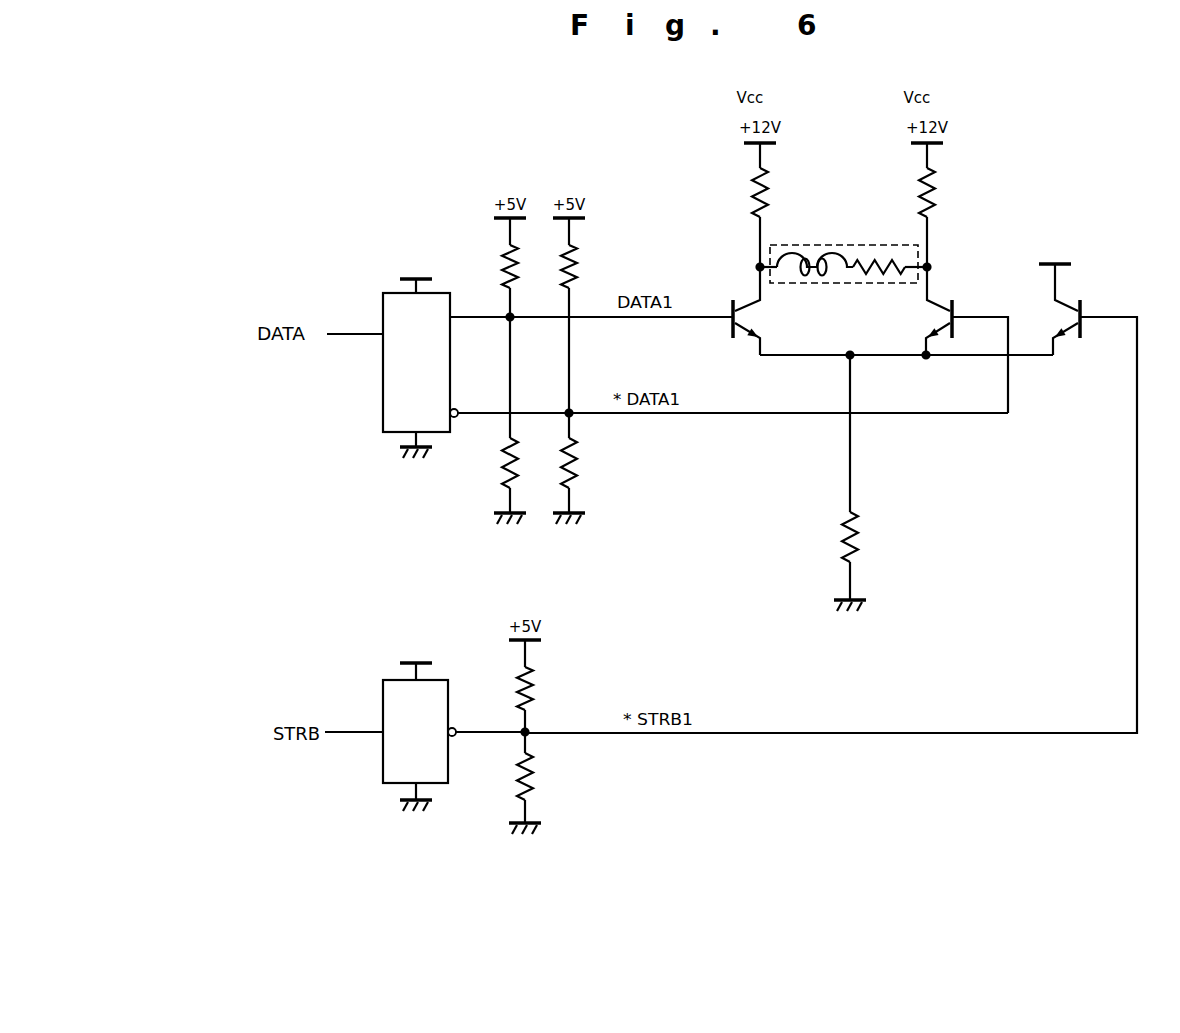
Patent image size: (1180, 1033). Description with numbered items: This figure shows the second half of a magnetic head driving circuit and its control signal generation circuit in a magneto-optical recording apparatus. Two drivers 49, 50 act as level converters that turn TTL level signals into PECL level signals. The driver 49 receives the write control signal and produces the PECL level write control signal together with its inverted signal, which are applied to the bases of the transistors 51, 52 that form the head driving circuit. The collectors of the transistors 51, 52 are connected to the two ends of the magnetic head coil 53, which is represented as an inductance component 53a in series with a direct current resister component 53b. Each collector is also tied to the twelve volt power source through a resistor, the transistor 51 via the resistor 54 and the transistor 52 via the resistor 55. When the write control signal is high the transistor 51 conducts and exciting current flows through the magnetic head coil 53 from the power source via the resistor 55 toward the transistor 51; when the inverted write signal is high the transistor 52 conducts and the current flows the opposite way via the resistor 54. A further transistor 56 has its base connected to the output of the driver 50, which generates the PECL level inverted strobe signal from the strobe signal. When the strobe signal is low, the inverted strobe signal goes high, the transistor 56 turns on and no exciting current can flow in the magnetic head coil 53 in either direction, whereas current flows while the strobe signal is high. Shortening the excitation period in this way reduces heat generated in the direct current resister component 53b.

The driver 49 is at (383, 308).
The driver 50 is at (383, 705).
The transistor 51 is at (730, 308).
The transistor 52 is at (957, 310).
The magnetic head coil 53 is at (844, 217).
The inductance component 53a is at (810, 262).
The direct current resister component 53b is at (893, 262).
The resistor 54 is at (752, 200).
The resistor 55 is at (937, 205).
The transistor 56 is at (1085, 308).